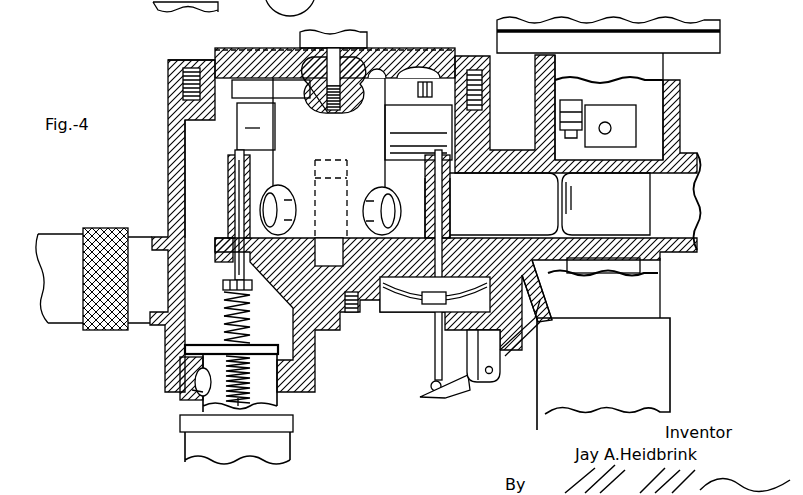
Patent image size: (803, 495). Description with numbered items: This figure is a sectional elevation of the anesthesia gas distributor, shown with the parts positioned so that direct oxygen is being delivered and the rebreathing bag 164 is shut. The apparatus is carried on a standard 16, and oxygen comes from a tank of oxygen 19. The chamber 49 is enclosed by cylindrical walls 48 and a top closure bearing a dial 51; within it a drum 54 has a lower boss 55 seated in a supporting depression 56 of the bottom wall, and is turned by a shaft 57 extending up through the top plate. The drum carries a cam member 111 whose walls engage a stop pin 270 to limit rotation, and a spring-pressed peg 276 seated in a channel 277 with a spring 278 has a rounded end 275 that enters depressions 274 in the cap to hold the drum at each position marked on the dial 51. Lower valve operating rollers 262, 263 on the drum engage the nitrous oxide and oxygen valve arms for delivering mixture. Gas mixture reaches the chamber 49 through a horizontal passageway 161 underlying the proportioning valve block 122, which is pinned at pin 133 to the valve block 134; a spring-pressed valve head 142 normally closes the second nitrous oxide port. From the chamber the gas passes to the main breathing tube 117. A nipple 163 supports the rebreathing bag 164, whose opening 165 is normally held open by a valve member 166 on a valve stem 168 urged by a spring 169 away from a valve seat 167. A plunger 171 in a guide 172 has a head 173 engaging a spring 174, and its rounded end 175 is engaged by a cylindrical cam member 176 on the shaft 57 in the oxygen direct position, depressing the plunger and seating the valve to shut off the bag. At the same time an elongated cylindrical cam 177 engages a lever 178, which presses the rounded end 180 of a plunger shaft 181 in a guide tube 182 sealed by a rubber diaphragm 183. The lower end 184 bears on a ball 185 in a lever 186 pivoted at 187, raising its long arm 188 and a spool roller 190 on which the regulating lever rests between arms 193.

The standard 16 is at (662, 338).
The oxygen tank 19 is at (152, 3).
The cylindrical walls 48 is at (172, 207).
The chamber 49 is at (192, 188).
The dial 51 is at (210, 56).
The drum 54 is at (380, 110).
The lower boss 55 is at (329, 240).
The supporting depression 56 is at (326, 266).
The shaft 57 is at (305, 50).
The cam member 111 is at (233, 48).
The main breathing tube 117 is at (140, 320).
The proportioning valve block 122 is at (722, 27).
The pin 133 is at (611, 128).
The valve block 134 is at (648, 92).
The valve head 142 is at (570, 98).
The horizontal passageway 161 is at (682, 205).
The nipple 163 is at (283, 405).
The rebreathing bag 164 is at (292, 450).
The opening 165 is at (194, 394).
The valve member 166 is at (215, 350).
The valve seat 167 is at (186, 367).
The valve stem 168 is at (238, 408).
The spring 169 is at (252, 375).
The plunger 171 is at (238, 178).
The guide 172 is at (240, 160).
The head 173 is at (246, 286).
The spring 174 is at (249, 332).
The rounded end 175 is at (232, 160).
The cylindrical cam member 176 is at (243, 135).
The elongated cylindrical cam 177 is at (437, 137).
The lever 178 is at (448, 168).
The rounded end 180 is at (450, 190).
The plunger shaft 181 is at (442, 220).
The guide tube 182 is at (452, 227).
The rubber diaphragm 183 is at (393, 318).
The lower end 184 is at (430, 375).
The ball 185 is at (430, 388).
The lever 186 is at (456, 400).
The pivot 187 is at (489, 375).
The long arm 188 is at (510, 357).
The spool roller 190 is at (540, 313).
The arms 193 is at (550, 283).
The valve operating roller 262 is at (377, 190).
The valve operating roller 263 is at (284, 186).
The stop pin 270 is at (462, 62).
The depressions 274 is at (377, 68).
The rounded end 275 is at (337, 60).
The peg 276 is at (310, 91).
The channel 277 is at (342, 113).
The spring 278 is at (330, 118).